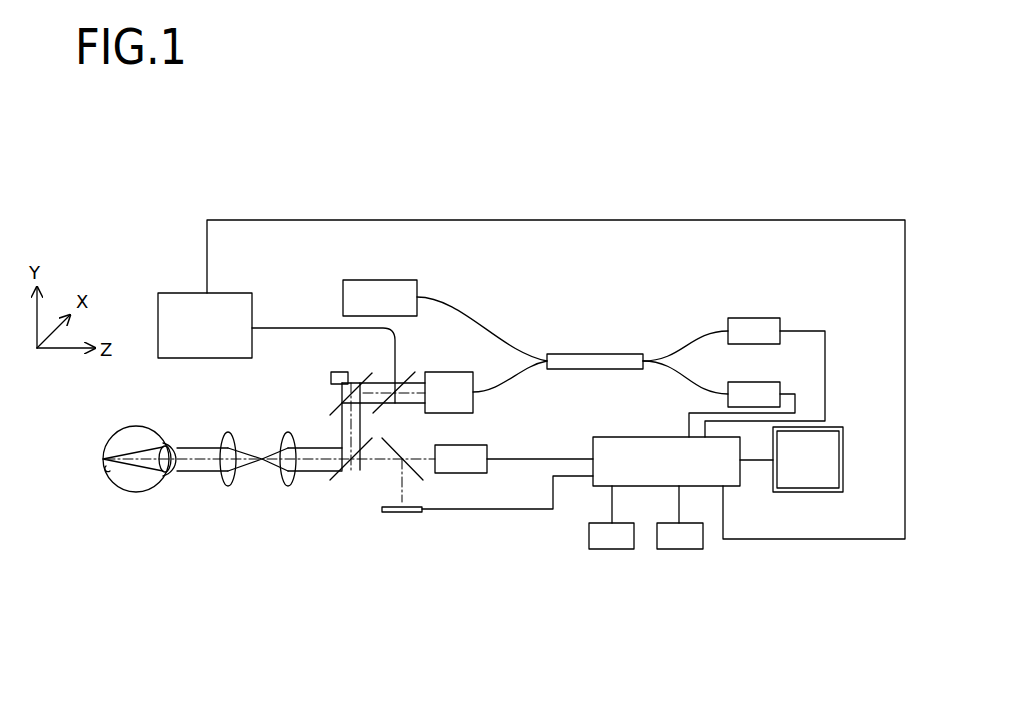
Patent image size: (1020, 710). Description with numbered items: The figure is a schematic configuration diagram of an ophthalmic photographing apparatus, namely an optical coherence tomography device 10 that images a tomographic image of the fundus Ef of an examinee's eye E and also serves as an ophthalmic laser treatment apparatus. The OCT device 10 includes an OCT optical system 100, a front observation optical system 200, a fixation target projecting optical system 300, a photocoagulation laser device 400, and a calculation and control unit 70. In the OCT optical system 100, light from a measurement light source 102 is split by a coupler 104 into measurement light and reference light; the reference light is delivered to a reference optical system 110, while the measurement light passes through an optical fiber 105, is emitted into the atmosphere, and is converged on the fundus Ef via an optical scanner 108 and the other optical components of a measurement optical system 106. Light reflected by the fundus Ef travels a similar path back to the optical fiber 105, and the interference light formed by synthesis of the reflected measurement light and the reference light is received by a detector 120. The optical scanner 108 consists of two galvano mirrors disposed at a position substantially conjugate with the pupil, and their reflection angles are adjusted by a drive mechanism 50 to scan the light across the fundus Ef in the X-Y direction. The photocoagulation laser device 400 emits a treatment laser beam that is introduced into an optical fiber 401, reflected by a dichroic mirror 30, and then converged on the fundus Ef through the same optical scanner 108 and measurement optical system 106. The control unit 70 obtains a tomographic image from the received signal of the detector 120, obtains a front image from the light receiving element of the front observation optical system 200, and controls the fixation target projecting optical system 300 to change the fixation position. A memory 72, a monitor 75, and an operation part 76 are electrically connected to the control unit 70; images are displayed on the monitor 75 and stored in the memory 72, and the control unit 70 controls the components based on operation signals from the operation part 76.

The optical coherence tomography device 10 is at (181, 214).
The OCT optical system 100 is at (658, 310).
The reference optical system 110 is at (343, 285).
The coupler 104 is at (585, 370).
The optical fiber 105 is at (493, 388).
The detector 120 is at (740, 320).
The measurement light source 102 is at (740, 388).
The optical scanner 108 is at (328, 398).
The dichroic mirror 30 is at (386, 416).
The drive mechanism 50 is at (340, 372).
The measurement optical system 106 is at (253, 404).
The front observation optical system 200 is at (487, 448).
The fixation target projecting optical system 300 is at (392, 514).
The photocoagulation laser device 400 is at (160, 292).
The optical fiber 401 is at (312, 328).
The control unit 70 is at (650, 437).
The memory 72 is at (600, 550).
The monitor 75 is at (810, 490).
The operation part 76 is at (672, 550).
The eye E is at (102, 437).
The fundus Ef is at (108, 473).